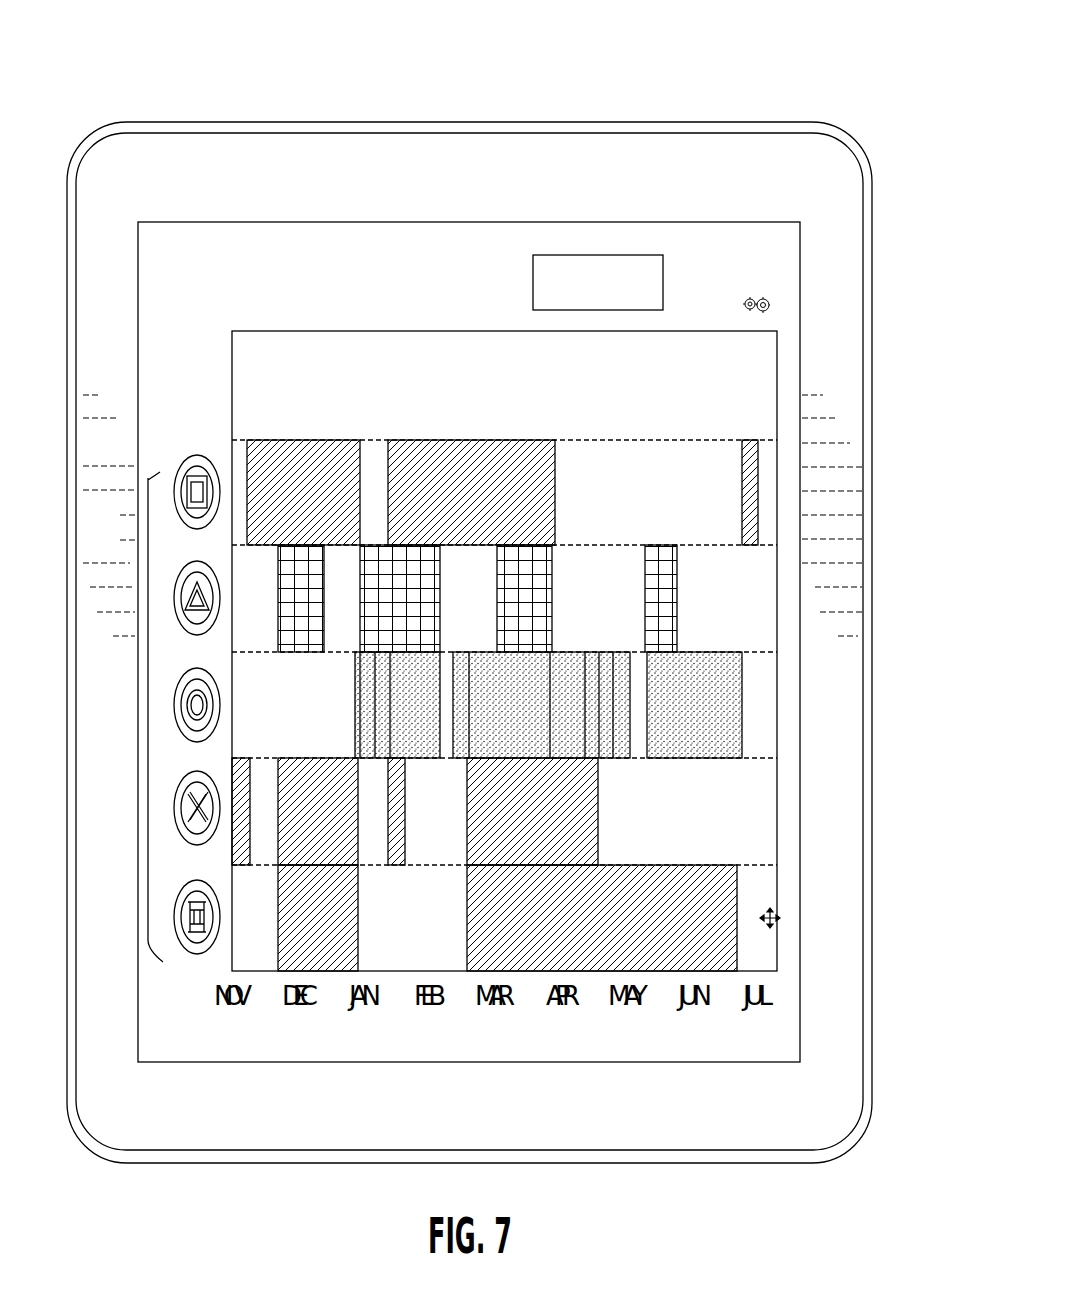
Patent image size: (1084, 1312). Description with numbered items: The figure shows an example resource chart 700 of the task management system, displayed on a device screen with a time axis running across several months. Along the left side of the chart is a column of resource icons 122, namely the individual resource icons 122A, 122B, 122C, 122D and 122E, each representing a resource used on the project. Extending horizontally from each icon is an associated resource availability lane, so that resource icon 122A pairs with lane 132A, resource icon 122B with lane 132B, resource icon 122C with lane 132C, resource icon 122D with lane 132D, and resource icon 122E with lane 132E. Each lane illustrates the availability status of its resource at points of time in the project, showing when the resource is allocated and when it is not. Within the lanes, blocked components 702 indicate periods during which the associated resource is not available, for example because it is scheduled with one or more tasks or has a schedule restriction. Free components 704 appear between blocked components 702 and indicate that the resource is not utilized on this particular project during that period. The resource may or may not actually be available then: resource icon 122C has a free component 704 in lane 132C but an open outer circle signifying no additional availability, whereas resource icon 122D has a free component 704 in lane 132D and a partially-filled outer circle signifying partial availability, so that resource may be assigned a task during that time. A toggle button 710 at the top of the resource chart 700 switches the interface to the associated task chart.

The resource chart 700 is at (485, 112).
The blocked component 702 is at (307, 458).
The free component 704 is at (372, 458).
The toggle button 710 is at (555, 311).
The resource icon 122 is at (173, 712).
The resource icon 122A is at (173, 504).
The resource icon 122B is at (173, 597).
The resource icon 122C is at (150, 714).
The resource icon 122D is at (207, 767).
The resource icon 122E is at (173, 917).
The resource availability lane 132A is at (562, 495).
The resource availability lane 132B is at (558, 612).
The resource availability lane 132C is at (762, 720).
The resource availability lane 132D is at (667, 824).
The resource availability lane 132E is at (762, 893).